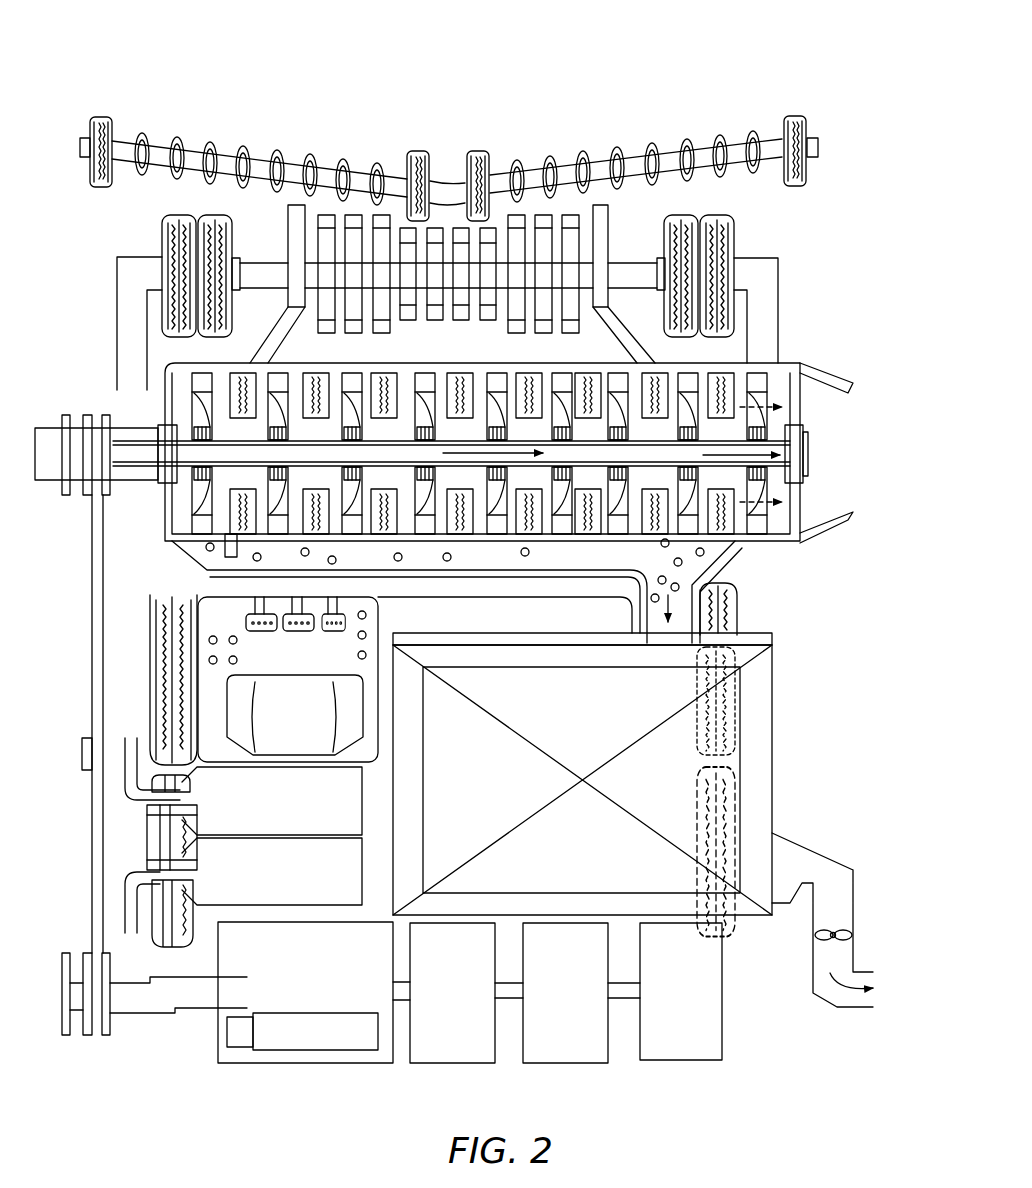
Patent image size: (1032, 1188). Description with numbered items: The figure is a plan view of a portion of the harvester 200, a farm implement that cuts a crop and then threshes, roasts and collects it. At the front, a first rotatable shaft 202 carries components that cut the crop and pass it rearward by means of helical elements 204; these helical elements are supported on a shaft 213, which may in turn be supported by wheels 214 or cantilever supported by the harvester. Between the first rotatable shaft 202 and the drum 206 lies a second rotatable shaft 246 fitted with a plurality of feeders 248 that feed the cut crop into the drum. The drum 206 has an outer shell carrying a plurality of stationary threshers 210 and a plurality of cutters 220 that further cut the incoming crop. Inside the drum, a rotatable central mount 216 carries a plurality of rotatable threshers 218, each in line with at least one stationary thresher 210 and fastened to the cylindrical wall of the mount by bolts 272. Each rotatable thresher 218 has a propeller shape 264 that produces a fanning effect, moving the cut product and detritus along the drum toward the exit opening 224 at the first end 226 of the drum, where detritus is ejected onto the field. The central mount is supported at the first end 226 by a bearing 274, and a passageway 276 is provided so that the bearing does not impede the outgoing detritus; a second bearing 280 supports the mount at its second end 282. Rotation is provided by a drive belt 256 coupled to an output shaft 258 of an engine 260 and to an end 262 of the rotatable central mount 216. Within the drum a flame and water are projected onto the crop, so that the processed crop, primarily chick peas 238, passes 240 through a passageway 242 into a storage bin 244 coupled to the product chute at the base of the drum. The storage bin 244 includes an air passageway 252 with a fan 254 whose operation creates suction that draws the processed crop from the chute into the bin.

The harvester 200 is at (822, 62).
The first rotatable shaft 202 is at (537, 170).
The helical elements 204 is at (277, 152).
The drum 206 is at (790, 363).
The stationary threshers 210 is at (690, 237).
The shaft 213 is at (380, 238).
The wheels 214 is at (480, 150).
The rotatable central mount 216 is at (790, 487).
The rotatable threshers 218 is at (740, 420).
The cutters 220 is at (240, 392).
The exit opening 224 is at (877, 483).
The first end 226 is at (850, 537).
The chick peas 238 is at (447, 561).
The passing of processed crop 240 is at (700, 610).
The passageway 242 is at (700, 672).
The storage bin 244 is at (602, 845).
The second rotatable shaft 246 is at (277, 280).
The feeders 248 is at (434, 250).
The air passageway 252 is at (853, 868).
The fan 254 is at (833, 930).
The drive belt 256 is at (92, 887).
The output shaft 258 is at (135, 1012).
The engine 260 is at (297, 980).
The end 262 is at (22, 478).
The propeller shape 264 is at (492, 412).
The bolts 272 is at (195, 465).
The bearing 274 is at (800, 445).
The passageway 276 is at (826, 472).
The bearing 280 is at (165, 427).
The second end 282 is at (142, 385).